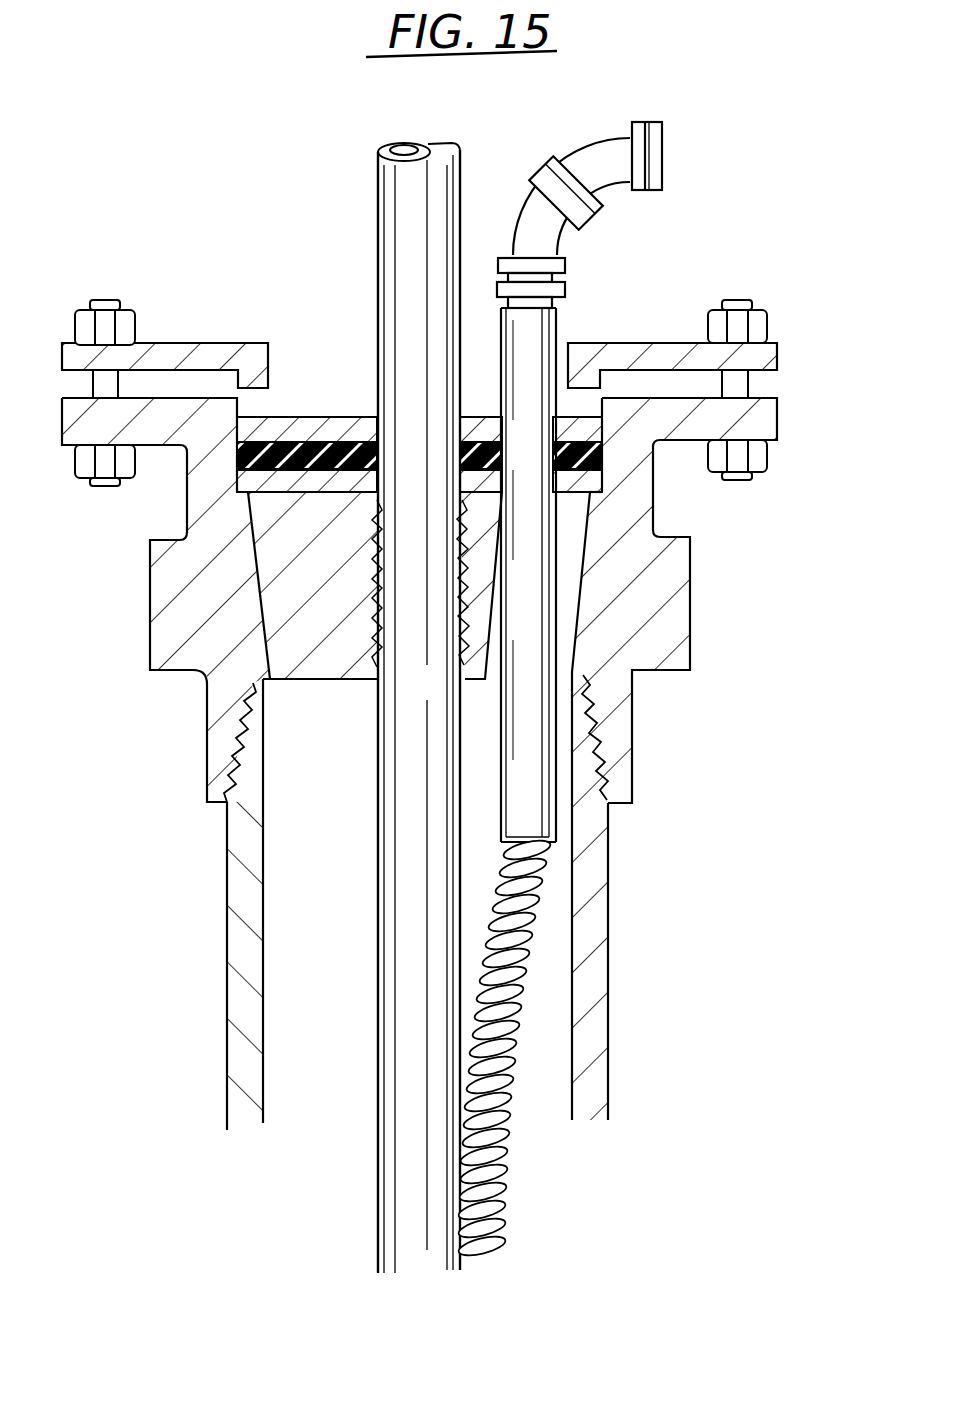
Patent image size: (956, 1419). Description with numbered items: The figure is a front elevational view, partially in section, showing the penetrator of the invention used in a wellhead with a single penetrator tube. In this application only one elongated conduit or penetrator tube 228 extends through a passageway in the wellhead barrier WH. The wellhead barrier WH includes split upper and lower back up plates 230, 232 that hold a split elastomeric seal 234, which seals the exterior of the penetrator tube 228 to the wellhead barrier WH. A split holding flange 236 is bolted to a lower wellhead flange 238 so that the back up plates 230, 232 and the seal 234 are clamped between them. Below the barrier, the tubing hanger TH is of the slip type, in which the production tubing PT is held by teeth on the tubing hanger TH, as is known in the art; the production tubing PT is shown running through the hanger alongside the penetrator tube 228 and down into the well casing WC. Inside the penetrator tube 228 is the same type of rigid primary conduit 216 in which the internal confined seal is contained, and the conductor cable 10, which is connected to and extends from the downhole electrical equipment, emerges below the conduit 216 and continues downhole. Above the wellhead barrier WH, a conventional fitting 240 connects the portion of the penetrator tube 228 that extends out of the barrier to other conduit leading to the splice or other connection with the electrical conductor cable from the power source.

The conductor cable 10 is at (510, 1172).
The rigid primary conduit 216 is at (540, 800).
The penetrator tube 228 is at (546, 325).
The upper back up plate 230 is at (297, 427).
The lower back up plate 232 is at (250, 489).
The split elastomeric seal 234 is at (332, 447).
The split holding flange 236 is at (760, 352).
The lower wellhead flange 238 is at (765, 424).
The conventional fitting 240 is at (565, 268).
The wellhead barrier WH is at (718, 568).
The tubing hanger TH is at (268, 580).
The production tubing PT is at (380, 856).
The well casing WC is at (588, 1000).